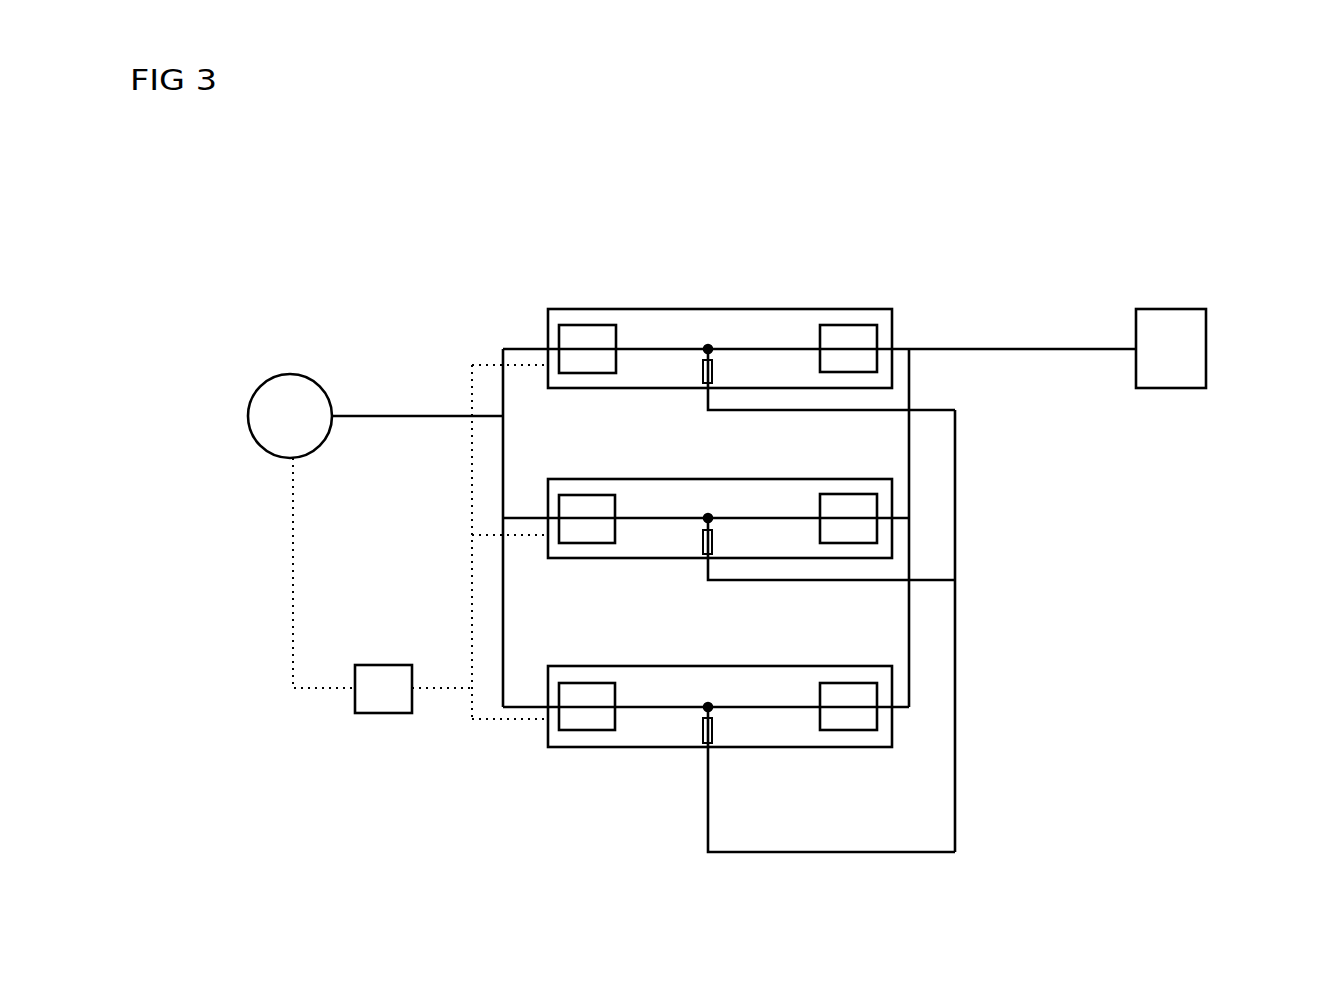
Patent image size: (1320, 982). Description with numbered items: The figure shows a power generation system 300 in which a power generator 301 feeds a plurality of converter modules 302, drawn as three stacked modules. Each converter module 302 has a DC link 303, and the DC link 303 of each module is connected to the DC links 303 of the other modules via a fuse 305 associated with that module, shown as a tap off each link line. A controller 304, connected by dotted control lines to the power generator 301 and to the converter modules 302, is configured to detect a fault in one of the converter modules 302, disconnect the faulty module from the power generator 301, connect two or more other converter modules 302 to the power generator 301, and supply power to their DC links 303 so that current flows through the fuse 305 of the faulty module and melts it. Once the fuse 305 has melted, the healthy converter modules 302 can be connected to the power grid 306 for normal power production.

The power generation system 300 is at (1190, 163).
The power generator 301 is at (290, 374).
The converter module 302 is at (840, 309).
The DC link 303 is at (734, 349).
The controller 304 is at (383, 665).
The fuse 305 is at (703, 371).
The power grid 306 is at (1192, 309).